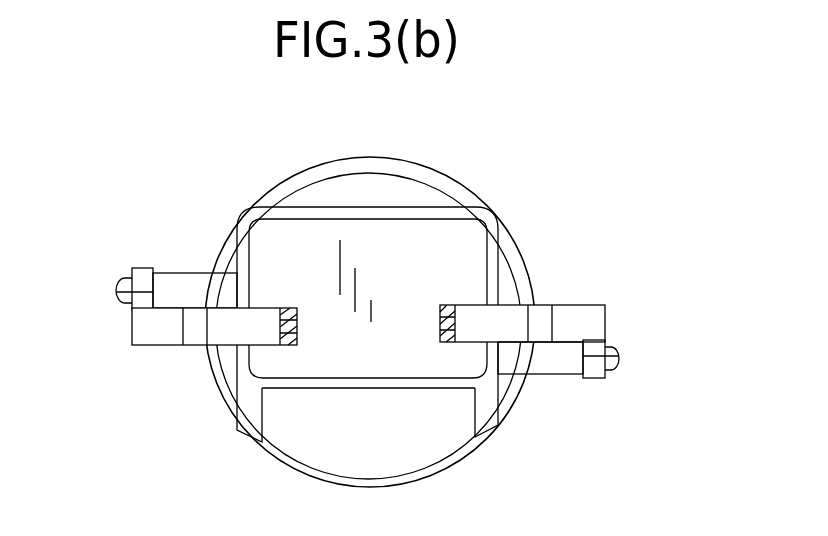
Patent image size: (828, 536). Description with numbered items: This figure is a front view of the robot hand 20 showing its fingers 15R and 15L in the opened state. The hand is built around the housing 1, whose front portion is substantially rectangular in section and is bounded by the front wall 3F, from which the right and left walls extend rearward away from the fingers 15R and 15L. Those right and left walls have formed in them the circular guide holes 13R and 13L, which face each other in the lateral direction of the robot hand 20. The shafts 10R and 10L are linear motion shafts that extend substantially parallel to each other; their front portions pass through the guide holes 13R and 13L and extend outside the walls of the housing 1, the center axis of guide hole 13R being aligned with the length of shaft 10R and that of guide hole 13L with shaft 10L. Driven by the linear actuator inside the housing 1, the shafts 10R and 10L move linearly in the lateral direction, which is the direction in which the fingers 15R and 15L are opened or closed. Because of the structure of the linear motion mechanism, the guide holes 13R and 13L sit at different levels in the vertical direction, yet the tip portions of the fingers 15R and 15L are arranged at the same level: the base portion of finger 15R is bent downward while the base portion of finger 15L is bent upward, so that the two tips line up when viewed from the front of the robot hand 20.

The robot hand 20 is at (469, 161).
The housing 1 is at (250, 204).
The guide hole 13R is at (233, 296).
The guide hole 13L is at (507, 349).
The front wall 3F is at (362, 357).
The shaft 10R is at (185, 272).
The finger 15R is at (168, 348).
The finger 15L is at (558, 304).
The shaft 10L is at (552, 376).